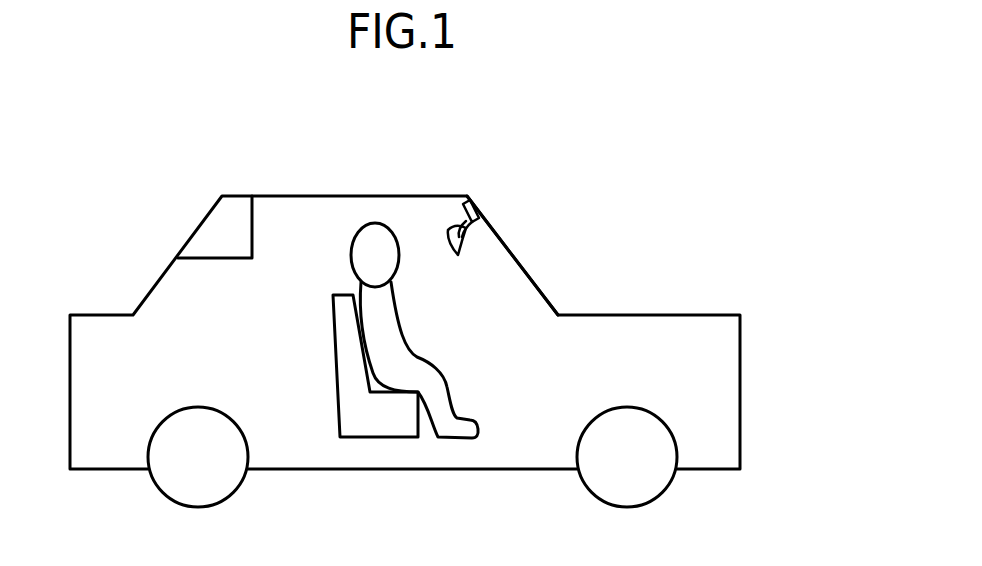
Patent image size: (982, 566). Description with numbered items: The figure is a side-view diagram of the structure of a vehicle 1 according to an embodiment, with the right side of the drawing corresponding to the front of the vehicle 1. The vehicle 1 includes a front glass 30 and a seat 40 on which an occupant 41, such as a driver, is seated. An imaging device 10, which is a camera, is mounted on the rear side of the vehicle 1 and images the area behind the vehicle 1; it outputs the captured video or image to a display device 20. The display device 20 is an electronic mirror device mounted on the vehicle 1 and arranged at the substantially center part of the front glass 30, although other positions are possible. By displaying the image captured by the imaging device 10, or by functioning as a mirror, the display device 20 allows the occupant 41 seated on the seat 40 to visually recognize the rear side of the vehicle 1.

The vehicle 1 is at (614, 138).
The imaging device 10 is at (219, 223).
The display device 20 is at (480, 208).
The front glass 30 is at (515, 255).
The seat 40 is at (378, 437).
The occupant 41 is at (457, 437).